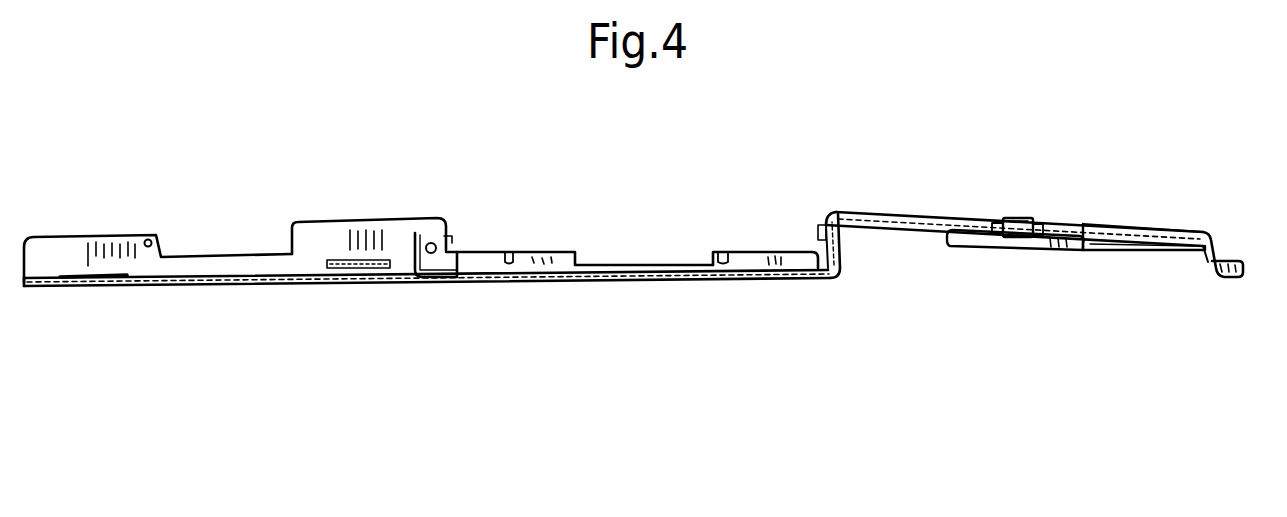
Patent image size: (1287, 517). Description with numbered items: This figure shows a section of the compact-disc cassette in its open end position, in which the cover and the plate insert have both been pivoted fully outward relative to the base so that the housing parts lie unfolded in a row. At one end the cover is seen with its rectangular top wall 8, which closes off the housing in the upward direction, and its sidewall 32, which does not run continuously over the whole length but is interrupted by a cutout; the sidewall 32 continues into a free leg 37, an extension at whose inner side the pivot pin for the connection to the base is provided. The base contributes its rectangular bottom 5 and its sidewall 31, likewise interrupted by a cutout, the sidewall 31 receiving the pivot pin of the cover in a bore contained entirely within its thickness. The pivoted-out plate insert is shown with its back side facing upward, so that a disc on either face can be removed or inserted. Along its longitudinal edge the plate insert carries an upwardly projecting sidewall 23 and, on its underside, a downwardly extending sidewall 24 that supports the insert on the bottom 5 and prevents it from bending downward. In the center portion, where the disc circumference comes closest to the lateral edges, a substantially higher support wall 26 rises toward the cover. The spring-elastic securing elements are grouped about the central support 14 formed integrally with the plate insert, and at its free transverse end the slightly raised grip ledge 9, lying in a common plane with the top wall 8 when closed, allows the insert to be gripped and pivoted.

The bottom 5 is at (482, 277).
The top wall 8 is at (255, 283).
The grip ledge 9 is at (1225, 282).
The central support 14 is at (1032, 208).
The upwardly projecting sidewall 23 is at (875, 232).
The downwardly extending sidewall 24 is at (908, 213).
The support wall 26 is at (977, 236).
The sidewall of the base 31 is at (550, 275).
The sidewall of the cover 32 is at (152, 266).
The free leg 37 is at (423, 221).